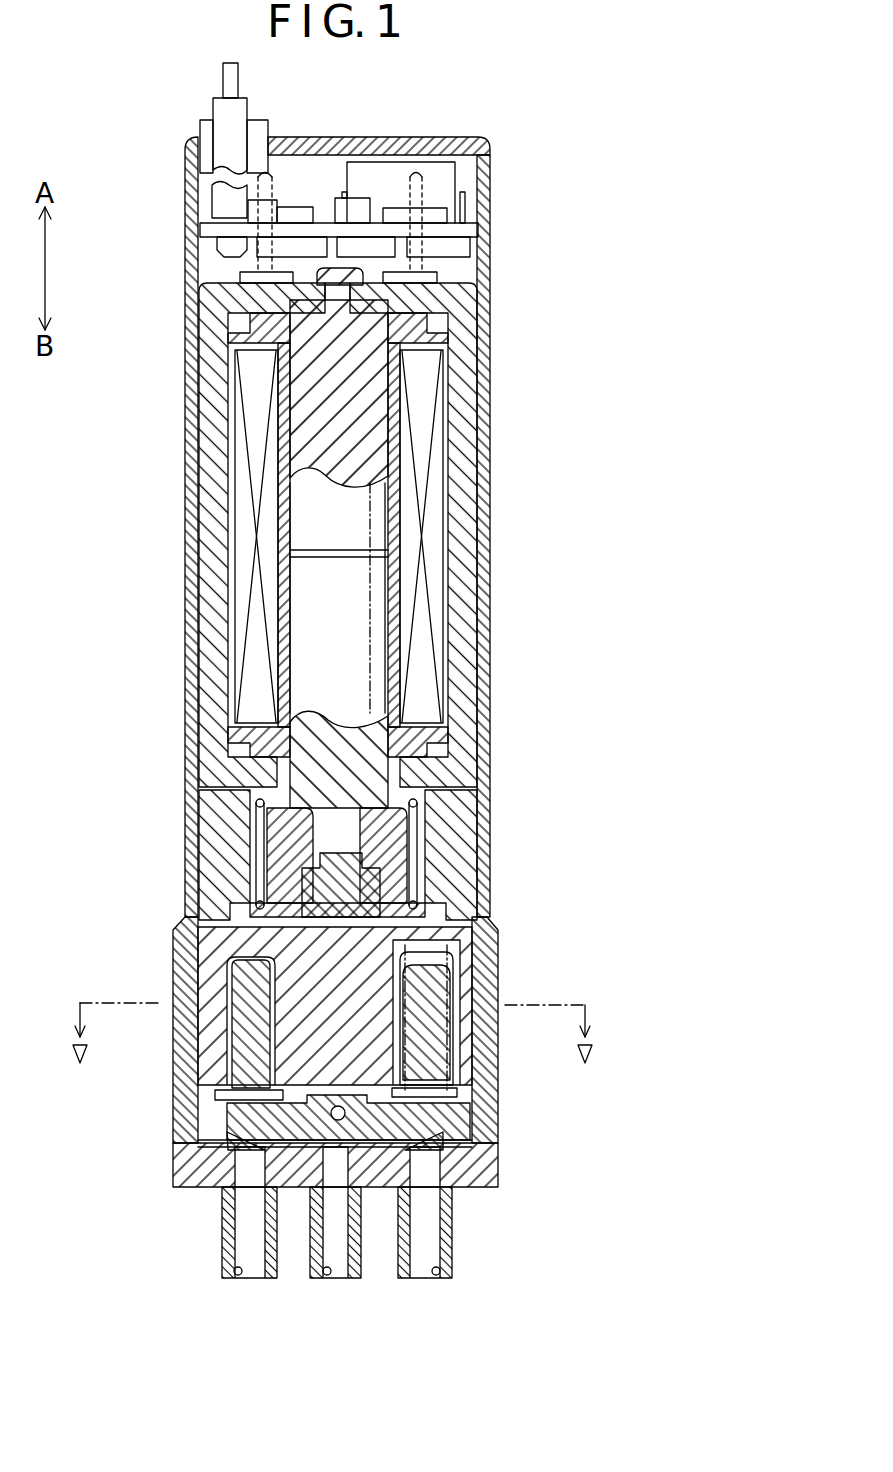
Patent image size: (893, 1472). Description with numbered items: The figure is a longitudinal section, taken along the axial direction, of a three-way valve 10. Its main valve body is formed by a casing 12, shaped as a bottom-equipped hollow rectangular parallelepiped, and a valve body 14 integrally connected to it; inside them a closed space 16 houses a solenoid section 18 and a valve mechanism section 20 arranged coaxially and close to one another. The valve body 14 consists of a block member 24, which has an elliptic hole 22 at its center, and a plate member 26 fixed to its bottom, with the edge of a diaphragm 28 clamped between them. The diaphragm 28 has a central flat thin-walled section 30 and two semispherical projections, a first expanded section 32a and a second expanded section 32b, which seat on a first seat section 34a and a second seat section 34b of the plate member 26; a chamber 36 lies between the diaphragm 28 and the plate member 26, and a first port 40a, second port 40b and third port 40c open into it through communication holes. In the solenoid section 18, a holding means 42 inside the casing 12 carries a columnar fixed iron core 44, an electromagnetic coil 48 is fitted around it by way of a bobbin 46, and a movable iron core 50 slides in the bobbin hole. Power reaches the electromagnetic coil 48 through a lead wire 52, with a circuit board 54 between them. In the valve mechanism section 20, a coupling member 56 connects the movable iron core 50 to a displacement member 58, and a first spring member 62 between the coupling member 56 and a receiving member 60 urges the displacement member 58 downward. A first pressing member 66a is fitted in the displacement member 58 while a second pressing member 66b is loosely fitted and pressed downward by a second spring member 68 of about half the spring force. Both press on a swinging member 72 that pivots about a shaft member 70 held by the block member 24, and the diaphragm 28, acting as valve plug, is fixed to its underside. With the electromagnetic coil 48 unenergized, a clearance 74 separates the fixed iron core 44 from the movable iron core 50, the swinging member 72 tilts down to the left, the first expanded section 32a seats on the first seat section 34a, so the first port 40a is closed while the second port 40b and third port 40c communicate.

The three-way valve 10 is at (577, 79).
The casing 12 is at (490, 488).
The valve body 14 is at (501, 993).
The closed space 16 is at (199, 265).
The solenoid section 18 is at (364, 428).
The valve mechanism section 20 is at (318, 969).
The hole 22 is at (207, 1057).
The block member 24 is at (433, 972).
The plate member 26 is at (488, 1163).
The diaphragm 28 is at (337, 1150).
The flat thin-walled section 30 is at (250, 1197).
The first expanded section 32a is at (253, 1160).
The second expanded section 32b is at (412, 1156).
The first seat section 34a is at (245, 1148).
The second seat section 34b is at (446, 1192).
The chamber 36 is at (385, 1187).
The first port 40a is at (238, 1277).
The second port 40b is at (330, 1277).
The third port 40c is at (440, 1280).
The holding means 42 is at (458, 545).
The fixed iron core 44 is at (335, 412).
The bobbin 46 is at (396, 610).
The electromagnetic coil 48 is at (245, 542).
The movable iron core 50 is at (322, 662).
The lead wire 52 is at (222, 84).
The circuit board 54 is at (377, 198).
The coupling member 56 is at (385, 848).
The displacement member 58 is at (337, 1045).
The receiving member 60 is at (440, 772).
The first spring member 62 is at (256, 806).
The first pressing member 66a is at (253, 977).
The second pressing member 66b is at (480, 960).
The second spring member 68 is at (460, 1082).
The shaft member 70 is at (250, 1112).
The swinging member 72 is at (470, 1113).
The clearance 74 is at (342, 532).